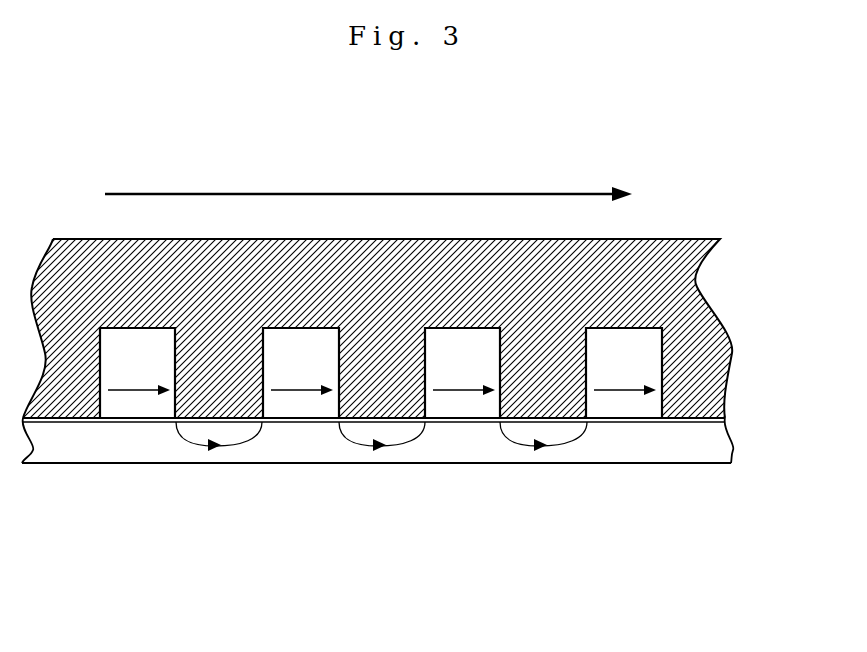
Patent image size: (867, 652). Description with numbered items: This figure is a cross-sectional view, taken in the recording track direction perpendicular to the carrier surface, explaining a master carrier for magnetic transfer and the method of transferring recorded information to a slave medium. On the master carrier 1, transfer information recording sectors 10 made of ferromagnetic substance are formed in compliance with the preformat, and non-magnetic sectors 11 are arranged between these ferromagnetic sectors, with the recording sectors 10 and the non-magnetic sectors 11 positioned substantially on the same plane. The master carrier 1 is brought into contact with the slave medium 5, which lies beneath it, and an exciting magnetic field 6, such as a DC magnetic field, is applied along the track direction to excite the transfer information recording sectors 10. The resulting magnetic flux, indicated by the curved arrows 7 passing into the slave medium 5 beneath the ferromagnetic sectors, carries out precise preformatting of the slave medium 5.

The master carrier for magnetic transfer 1 is at (733, 312).
The slave medium 5 is at (241, 455).
The exciting magnetic field 6 is at (487, 187).
The circulating flow 7 is at (385, 450).
The transfer information recording sector 10 is at (647, 373).
The non-magnetic sector 11 is at (553, 365).